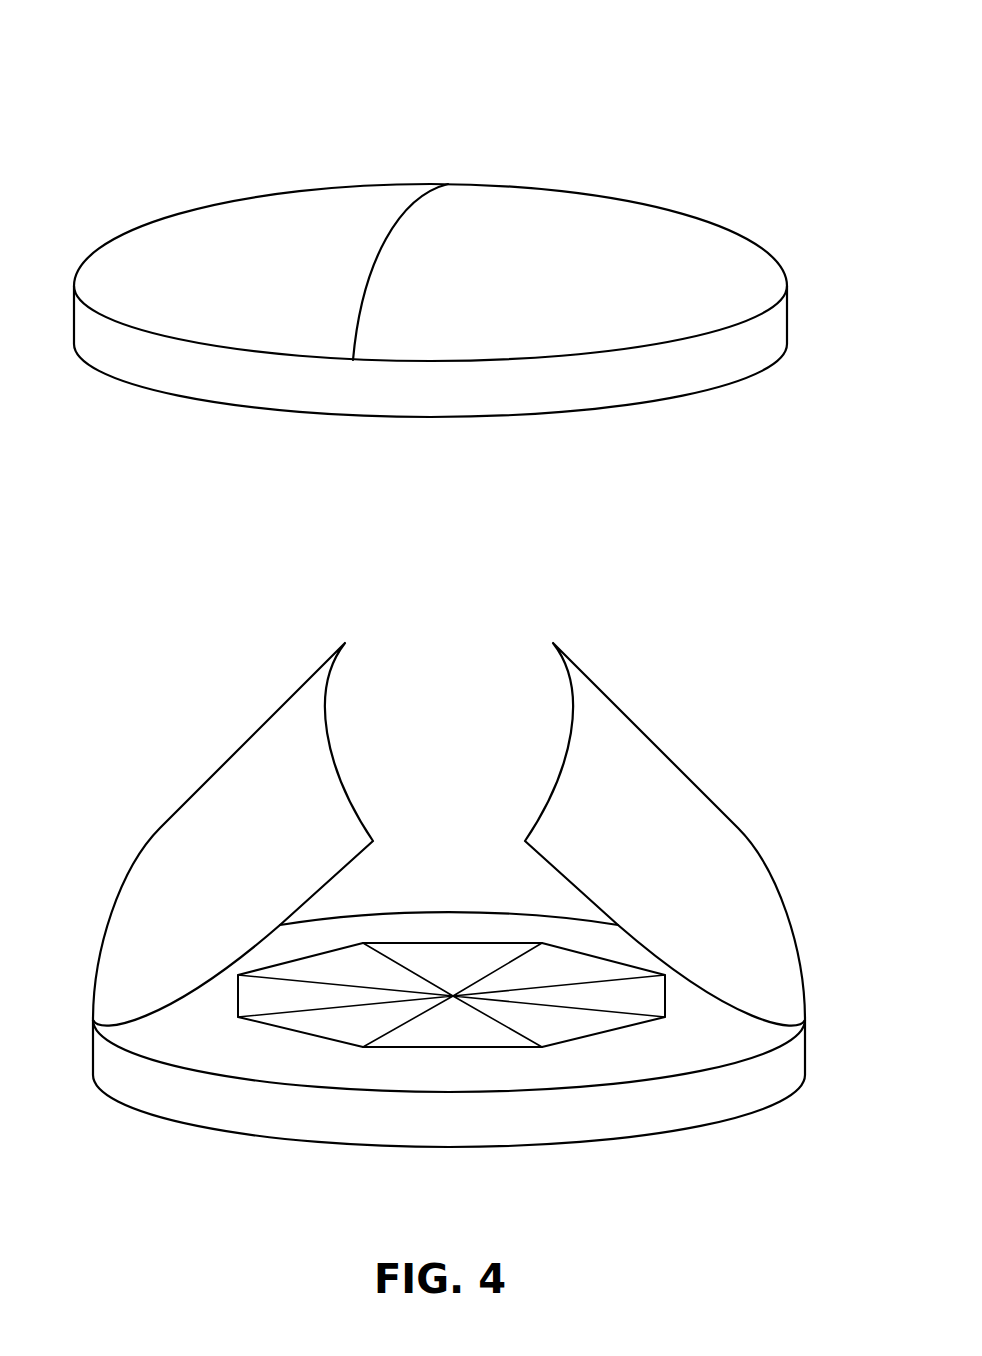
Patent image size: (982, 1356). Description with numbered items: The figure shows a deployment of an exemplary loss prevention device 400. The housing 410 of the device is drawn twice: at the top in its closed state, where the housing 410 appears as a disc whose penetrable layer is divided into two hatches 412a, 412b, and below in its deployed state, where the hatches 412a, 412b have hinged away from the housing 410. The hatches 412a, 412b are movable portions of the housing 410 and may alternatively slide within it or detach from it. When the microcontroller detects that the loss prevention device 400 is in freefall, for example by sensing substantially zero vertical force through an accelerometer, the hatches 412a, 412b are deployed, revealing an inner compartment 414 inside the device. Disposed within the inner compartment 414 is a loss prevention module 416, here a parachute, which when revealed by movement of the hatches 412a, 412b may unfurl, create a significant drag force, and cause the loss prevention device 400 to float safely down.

The loss prevention device 400 is at (88, 77).
The housing 410 is at (228, 378).
The hatch 412a is at (318, 230).
The hatch 412b is at (540, 230).
The inner compartment 414 is at (442, 930).
The loss prevention module 416 is at (329, 1042).